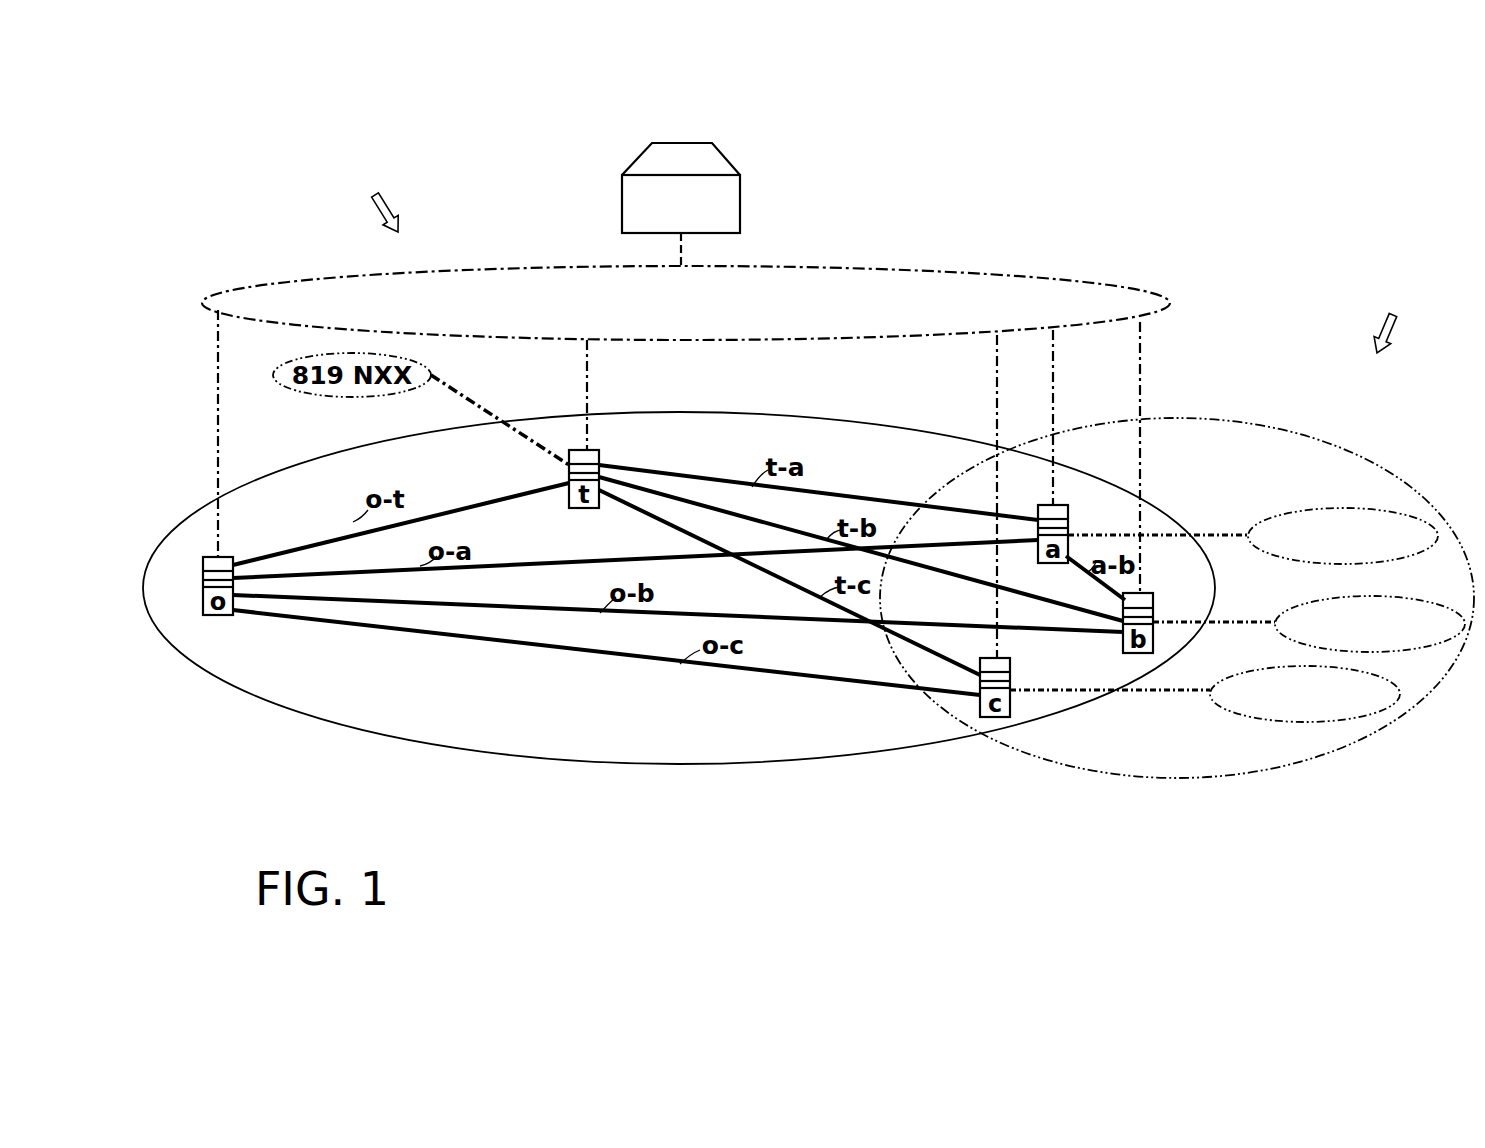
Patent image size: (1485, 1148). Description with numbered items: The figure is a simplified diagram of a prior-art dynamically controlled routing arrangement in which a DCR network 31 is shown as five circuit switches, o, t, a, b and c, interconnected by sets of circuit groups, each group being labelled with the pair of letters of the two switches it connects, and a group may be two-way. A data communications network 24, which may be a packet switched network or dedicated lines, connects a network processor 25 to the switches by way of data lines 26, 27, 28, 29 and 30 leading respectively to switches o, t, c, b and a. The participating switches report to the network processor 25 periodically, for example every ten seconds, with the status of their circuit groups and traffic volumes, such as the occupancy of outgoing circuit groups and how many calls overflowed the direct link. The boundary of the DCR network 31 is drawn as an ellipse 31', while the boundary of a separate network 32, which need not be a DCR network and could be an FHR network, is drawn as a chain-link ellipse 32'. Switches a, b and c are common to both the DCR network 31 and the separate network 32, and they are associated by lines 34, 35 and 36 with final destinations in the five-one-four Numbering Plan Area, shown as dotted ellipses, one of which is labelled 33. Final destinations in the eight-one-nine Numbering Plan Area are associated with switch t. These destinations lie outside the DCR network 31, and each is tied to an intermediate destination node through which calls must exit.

The data communications network 24 is at (857, 266).
The network processor 25 is at (741, 181).
The data line 26 is at (220, 455).
The data line 27 is at (589, 370).
The data line 28 is at (996, 404).
The data line 29 is at (1052, 404).
The data line 30 is at (1139, 404).
The DCR network 31 is at (890, 360).
The separate network 32 is at (1370, 464).
The number group 514 800-999 33 is at (1270, 720).
The line 34 is at (1203, 533).
The line 35 is at (1220, 621).
The line 36 is at (1178, 690).
The ellipse 31' is at (679, 615).
The chain-link ellipse 32' is at (1177, 624).